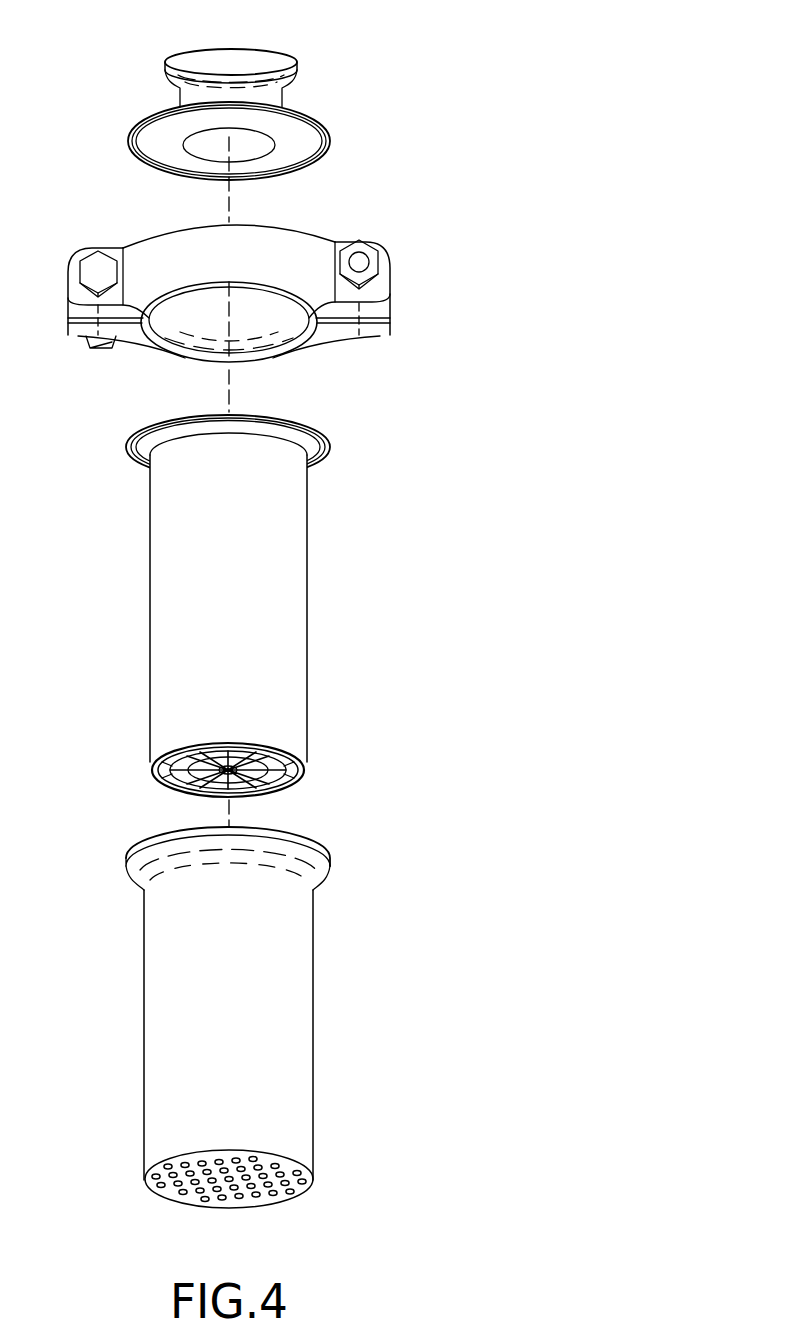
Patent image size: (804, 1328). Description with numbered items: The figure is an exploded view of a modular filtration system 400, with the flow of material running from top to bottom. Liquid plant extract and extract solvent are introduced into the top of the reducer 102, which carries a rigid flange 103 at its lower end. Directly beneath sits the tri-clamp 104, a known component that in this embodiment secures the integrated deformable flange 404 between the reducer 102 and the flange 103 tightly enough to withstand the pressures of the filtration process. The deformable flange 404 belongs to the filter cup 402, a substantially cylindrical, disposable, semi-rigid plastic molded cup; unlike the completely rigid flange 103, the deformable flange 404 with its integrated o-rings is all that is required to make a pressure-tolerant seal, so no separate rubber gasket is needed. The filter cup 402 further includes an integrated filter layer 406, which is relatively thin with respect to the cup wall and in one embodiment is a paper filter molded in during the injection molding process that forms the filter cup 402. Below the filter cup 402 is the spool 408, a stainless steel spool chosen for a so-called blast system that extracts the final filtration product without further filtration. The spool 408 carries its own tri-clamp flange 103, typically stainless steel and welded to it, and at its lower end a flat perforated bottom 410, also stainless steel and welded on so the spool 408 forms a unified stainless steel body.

The modular filtration system 400 is at (467, 82).
The reducer 102 is at (278, 100).
The flange 103 is at (290, 62).
The tri-clamp 104 is at (390, 298).
The deformable flange 404 is at (330, 452).
The filter cup 402 is at (307, 649).
The filter layer 406 is at (303, 770).
The spool 408 is at (313, 1010).
The flat perforated bottom 410 is at (295, 1178).